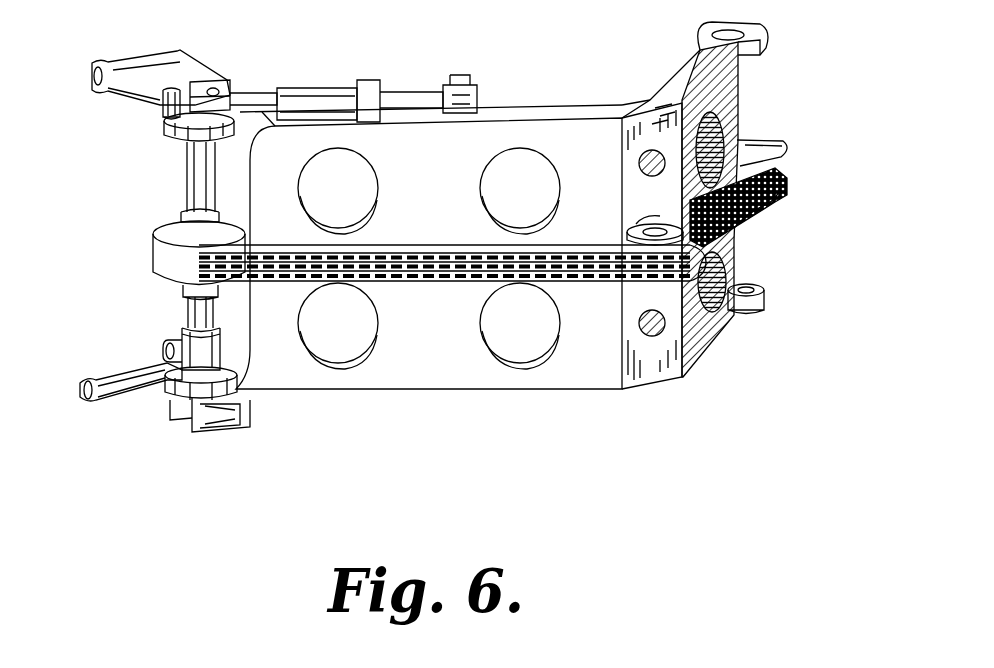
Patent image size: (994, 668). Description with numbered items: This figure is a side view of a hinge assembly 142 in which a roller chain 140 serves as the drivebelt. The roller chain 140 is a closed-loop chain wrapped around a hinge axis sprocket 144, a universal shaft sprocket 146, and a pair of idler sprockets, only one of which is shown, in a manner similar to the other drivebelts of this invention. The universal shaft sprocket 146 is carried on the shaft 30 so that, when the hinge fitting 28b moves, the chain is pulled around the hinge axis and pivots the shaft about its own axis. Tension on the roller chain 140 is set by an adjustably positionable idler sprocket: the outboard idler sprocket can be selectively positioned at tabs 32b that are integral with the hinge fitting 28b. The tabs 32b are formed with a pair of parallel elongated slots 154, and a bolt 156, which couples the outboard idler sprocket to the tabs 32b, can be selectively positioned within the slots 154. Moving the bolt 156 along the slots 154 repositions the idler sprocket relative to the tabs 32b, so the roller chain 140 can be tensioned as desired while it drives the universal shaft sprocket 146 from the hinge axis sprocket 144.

The hinge fitting 28b is at (432, 170).
The shaft 30 is at (194, 165).
The tabs 32b is at (753, 237).
The roller chain 140 is at (776, 185).
The hinge assembly 142 is at (740, 90).
The hinge axis sprocket 144 is at (778, 145).
The universal shaft sprocket 146 is at (173, 228).
The elongated slots 154 is at (660, 222).
The bolt 156 is at (673, 230).